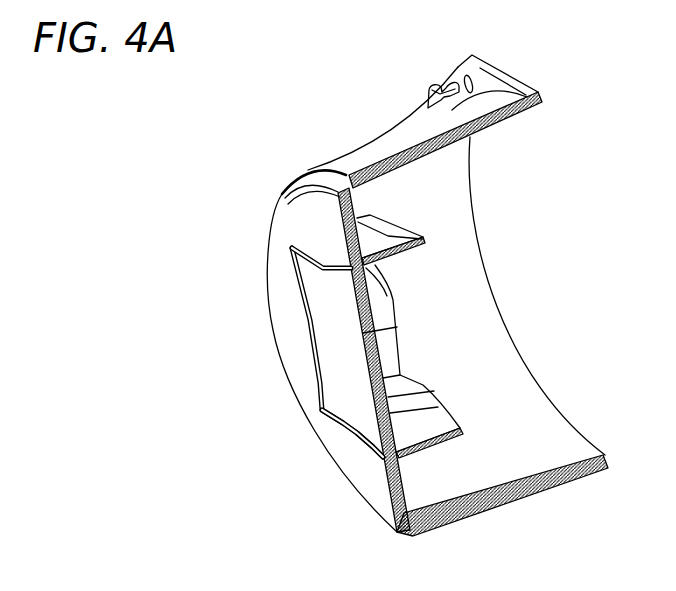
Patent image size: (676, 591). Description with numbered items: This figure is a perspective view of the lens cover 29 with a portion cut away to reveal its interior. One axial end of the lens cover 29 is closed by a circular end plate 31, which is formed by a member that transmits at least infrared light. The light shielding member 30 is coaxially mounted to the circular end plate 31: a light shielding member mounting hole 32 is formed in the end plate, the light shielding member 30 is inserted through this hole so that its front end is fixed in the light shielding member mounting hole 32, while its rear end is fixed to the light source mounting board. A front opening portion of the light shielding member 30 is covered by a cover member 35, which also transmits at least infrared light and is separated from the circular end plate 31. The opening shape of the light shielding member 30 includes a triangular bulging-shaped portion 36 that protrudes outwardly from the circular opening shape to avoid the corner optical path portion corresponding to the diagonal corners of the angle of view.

The lens cover 29 is at (370, 142).
The light shielding member 30 is at (425, 447).
The circular end plate 31 is at (367, 488).
The light shielding member mounting hole 32 is at (312, 338).
The cover member 35 is at (373, 352).
The triangular bulging-shaped portion 36 is at (292, 250).